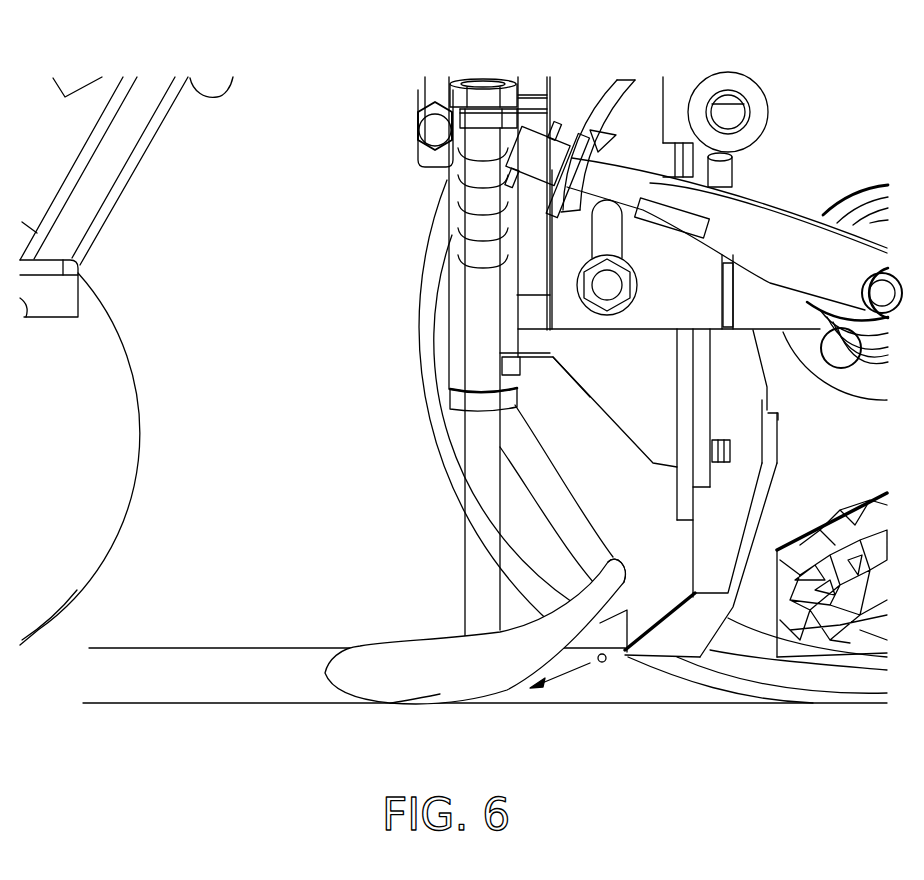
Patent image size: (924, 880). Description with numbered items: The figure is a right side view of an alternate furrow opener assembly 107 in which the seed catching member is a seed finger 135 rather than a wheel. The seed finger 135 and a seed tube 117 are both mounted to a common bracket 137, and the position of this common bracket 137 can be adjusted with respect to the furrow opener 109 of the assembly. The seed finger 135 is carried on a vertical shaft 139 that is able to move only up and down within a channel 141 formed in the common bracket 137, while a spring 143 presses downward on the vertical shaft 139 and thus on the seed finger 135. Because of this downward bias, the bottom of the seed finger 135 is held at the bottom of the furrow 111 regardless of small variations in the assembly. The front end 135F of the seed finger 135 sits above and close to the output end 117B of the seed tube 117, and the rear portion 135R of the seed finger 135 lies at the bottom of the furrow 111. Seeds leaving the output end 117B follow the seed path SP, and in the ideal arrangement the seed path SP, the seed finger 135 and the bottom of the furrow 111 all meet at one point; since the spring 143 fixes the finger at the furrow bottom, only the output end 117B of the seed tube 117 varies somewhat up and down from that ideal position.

The furrow opener assembly 107 is at (650, 78).
The furrow opener 109 is at (850, 683).
The furrow 111 is at (227, 677).
The seed tube 117 is at (724, 588).
The output end of the seed tube 117B is at (632, 660).
The seed finger 135 is at (462, 627).
The front end of the seed finger 135F is at (608, 565).
The rear portion of the seed finger 135R is at (412, 688).
The common bracket 137 is at (600, 410).
The vertical shaft 139 is at (465, 552).
The channel 141 is at (466, 343).
The spring 143 is at (468, 218).
The seed path SP is at (572, 670).